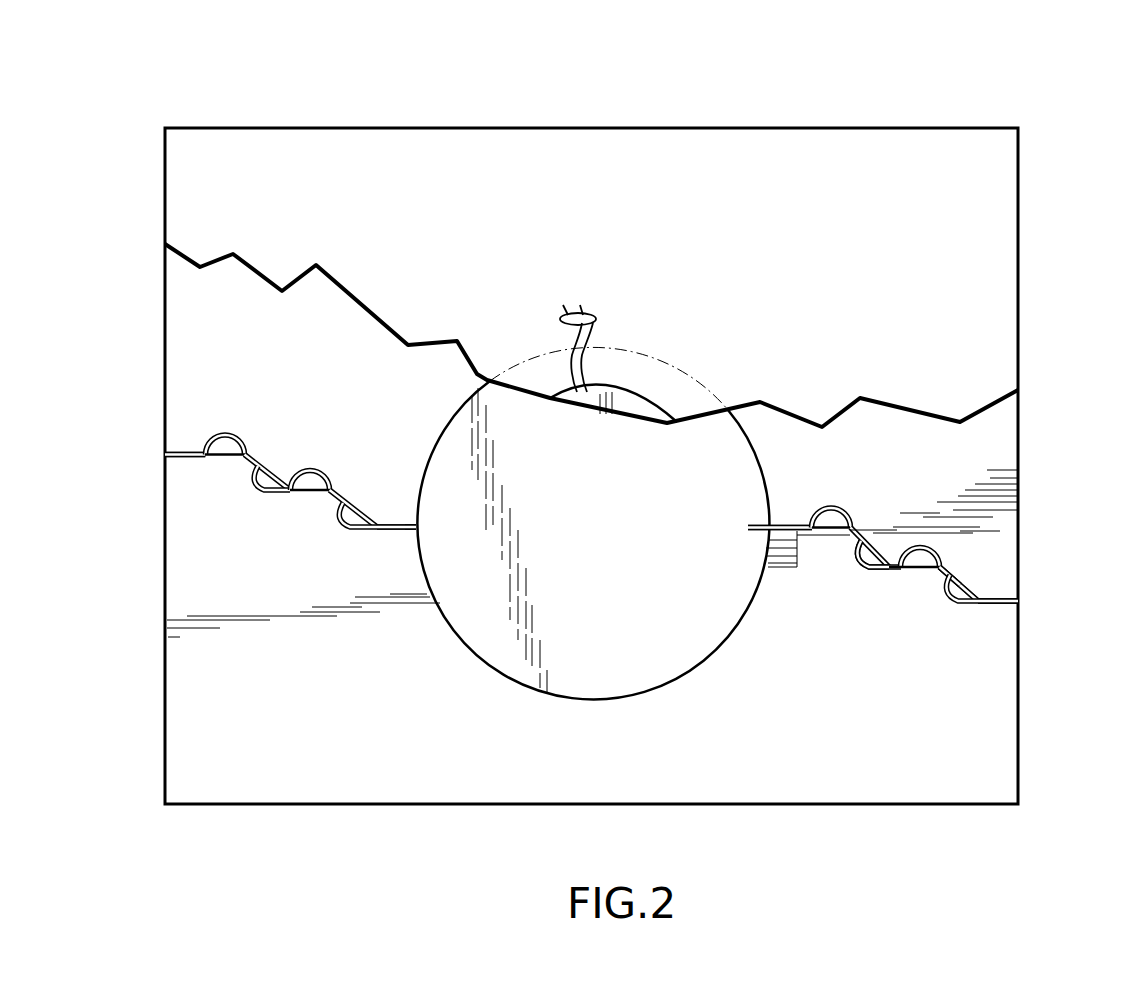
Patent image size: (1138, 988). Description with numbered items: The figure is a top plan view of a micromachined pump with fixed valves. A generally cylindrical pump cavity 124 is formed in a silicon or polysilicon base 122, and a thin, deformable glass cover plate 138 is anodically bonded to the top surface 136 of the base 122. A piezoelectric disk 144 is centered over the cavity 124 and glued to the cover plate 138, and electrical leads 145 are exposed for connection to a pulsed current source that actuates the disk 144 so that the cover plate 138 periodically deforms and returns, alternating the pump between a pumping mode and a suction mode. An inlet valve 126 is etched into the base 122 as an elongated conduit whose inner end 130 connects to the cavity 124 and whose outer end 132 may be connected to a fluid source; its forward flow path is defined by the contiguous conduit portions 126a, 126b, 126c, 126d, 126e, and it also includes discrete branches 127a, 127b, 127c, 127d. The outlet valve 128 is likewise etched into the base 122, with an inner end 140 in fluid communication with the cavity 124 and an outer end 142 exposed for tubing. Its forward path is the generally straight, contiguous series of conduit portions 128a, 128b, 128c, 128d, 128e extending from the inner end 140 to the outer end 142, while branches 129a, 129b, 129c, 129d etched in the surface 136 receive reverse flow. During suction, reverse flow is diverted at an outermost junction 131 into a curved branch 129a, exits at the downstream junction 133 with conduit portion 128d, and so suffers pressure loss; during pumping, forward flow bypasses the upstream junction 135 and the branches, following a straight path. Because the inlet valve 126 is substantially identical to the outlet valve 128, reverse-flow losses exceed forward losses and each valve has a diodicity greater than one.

The base 122 is at (317, 805).
The pump cavity 124 is at (666, 684).
The inlet valve 126 is at (384, 546).
The conduit portion 126a is at (177, 460).
The conduit portion 126b is at (258, 453).
The conduit portion 126c is at (307, 497).
The conduit portion 126d is at (346, 491).
The conduit portion 126e is at (397, 528).
The branch 127a is at (337, 528).
The branch 127b is at (318, 471).
The branch 127c is at (250, 492).
The branch 127d is at (222, 437).
The outlet valve 128 is at (876, 586).
The conduit portion 128a is at (790, 562).
The conduit portion 128b is at (857, 530).
The conduit portion 128c is at (924, 583).
The conduit portion 128d is at (948, 568).
The conduit portion 128e is at (993, 610).
The branch 129a is at (949, 607).
The branch 129b is at (918, 547).
The branch 129c is at (857, 569).
The branch 129d is at (824, 512).
The inner end 130 is at (416, 531).
The outermost junction 131 is at (995, 590).
The outer end 132 is at (165, 453).
The downstream junction 133 is at (922, 584).
The upstream junction 135 is at (791, 510).
The top surface 136 is at (677, 146).
The cover plate 138 is at (878, 772).
The inner end 140 is at (748, 526).
The outer end 142 is at (1018, 601).
The piezoelectric disk 144 is at (650, 413).
The electrical leads 145 is at (598, 319).